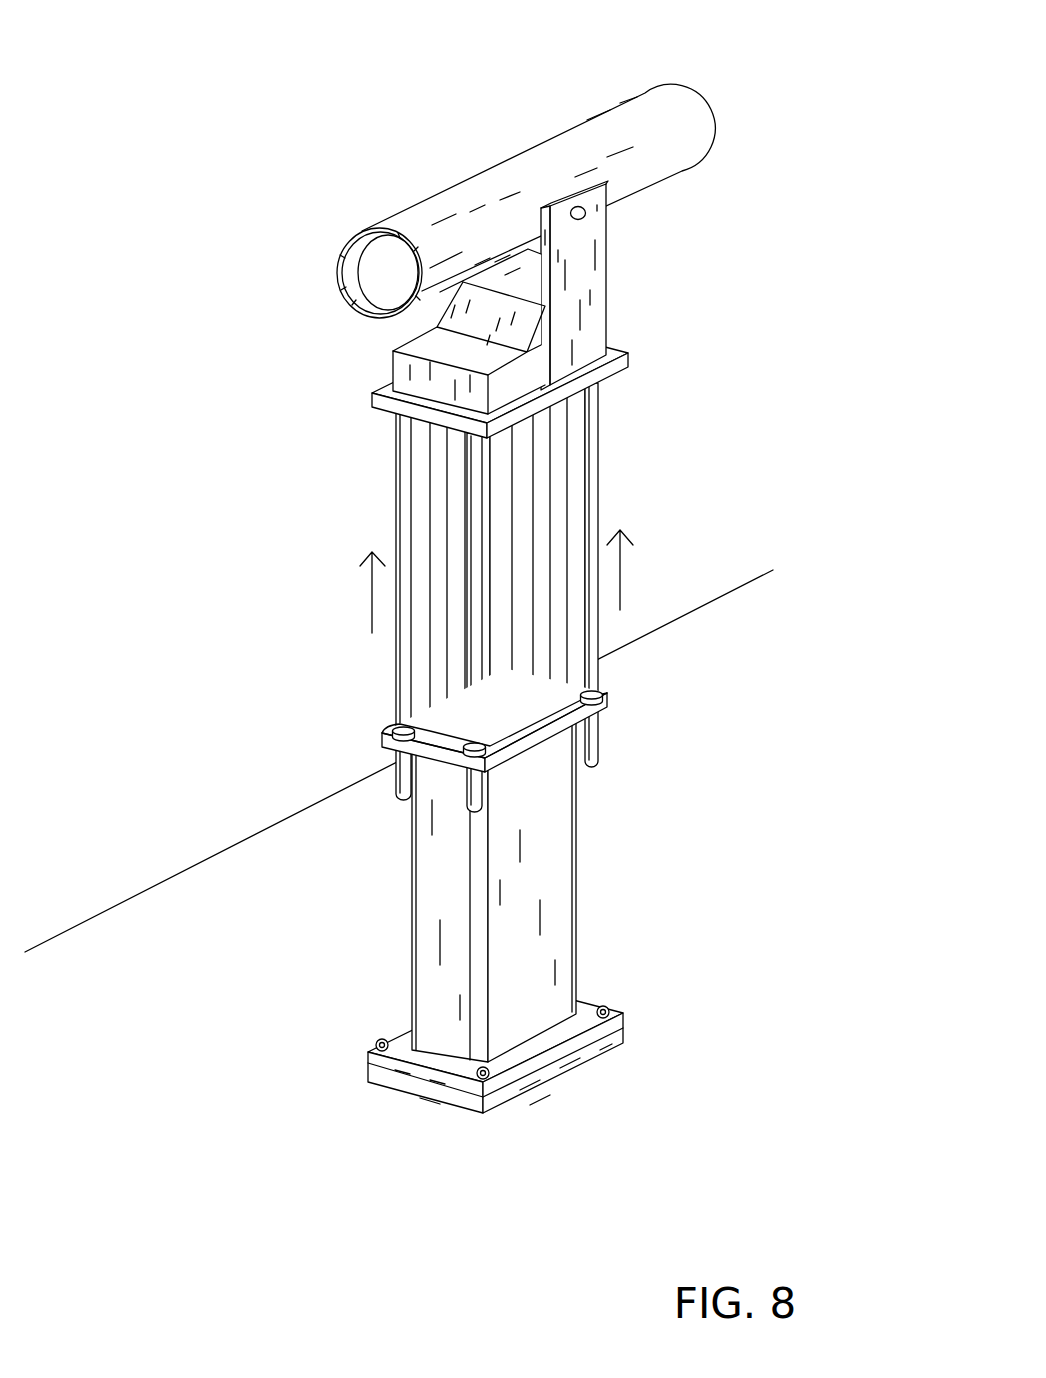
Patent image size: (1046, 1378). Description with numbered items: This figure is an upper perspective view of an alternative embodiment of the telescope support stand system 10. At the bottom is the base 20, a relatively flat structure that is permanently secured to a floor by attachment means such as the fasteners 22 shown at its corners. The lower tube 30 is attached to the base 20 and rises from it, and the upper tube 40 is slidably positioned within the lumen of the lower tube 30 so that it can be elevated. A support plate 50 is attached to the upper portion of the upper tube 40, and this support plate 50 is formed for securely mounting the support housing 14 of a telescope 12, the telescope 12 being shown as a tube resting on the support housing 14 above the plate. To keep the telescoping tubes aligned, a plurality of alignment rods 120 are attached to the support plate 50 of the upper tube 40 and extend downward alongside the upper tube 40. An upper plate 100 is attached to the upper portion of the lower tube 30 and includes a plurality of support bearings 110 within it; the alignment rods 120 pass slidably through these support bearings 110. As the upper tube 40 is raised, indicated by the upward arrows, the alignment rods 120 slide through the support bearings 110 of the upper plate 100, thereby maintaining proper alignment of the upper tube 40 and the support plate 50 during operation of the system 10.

The telescope support stand system 10 is at (438, 591).
The telescope 12 is at (528, 140).
The support housing 14 is at (597, 303).
The base 20 is at (580, 1073).
The fasteners 22 is at (609, 1017).
The lower tube 30 is at (567, 890).
The upper tube 40 is at (560, 487).
The support plate 50 is at (622, 370).
The upper plate 100 is at (492, 597).
The support bearings 110 is at (603, 692).
The alignment rods 120 is at (592, 577).